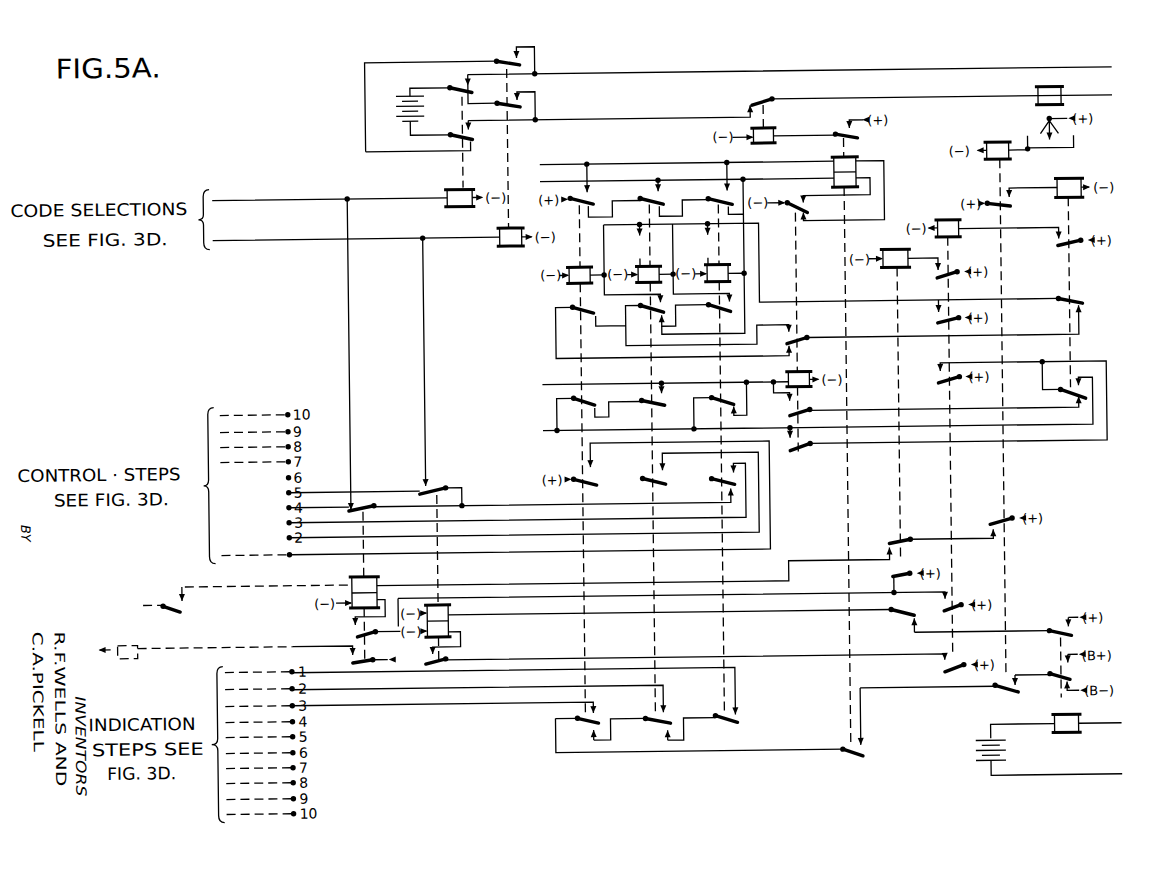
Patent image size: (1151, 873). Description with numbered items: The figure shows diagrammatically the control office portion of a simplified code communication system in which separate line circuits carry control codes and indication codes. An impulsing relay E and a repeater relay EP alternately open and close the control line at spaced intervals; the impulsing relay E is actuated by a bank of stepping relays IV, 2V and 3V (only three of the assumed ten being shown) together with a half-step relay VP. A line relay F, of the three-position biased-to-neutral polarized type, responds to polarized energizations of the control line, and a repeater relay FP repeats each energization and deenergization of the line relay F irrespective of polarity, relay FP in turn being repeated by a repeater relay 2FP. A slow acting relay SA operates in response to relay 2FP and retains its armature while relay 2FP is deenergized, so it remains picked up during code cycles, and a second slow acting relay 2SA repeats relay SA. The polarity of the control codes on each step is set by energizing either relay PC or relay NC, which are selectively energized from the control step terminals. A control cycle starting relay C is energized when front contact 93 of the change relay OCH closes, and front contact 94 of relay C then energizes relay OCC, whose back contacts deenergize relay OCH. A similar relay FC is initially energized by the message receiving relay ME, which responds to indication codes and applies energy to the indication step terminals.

The relay PC is at (459, 151).
The relay NC is at (510, 157).
The repeater relay EP is at (768, 128).
The impulsing relay E is at (838, 162).
The line relay F is at (1060, 93).
The repeater relay FP is at (1000, 397).
The repeater relay 2FP is at (1069, 272).
The slow acting relay SA is at (956, 226).
The second slow acting relay 2SA is at (892, 396).
The stepping relay 3V is at (581, 458).
The stepping relay 2V is at (650, 457).
The stepping relay IV is at (719, 457).
The half-step relay VP is at (798, 332).
The control cycle starting relay C is at (364, 586).
The relay FC is at (446, 608).
The change relay OCH is at (253, 581).
The front contact 93 is at (168, 619).
The relay OCC is at (121, 640).
The front contact 94 is at (370, 661).
The message receiving relay ME is at (1066, 684).